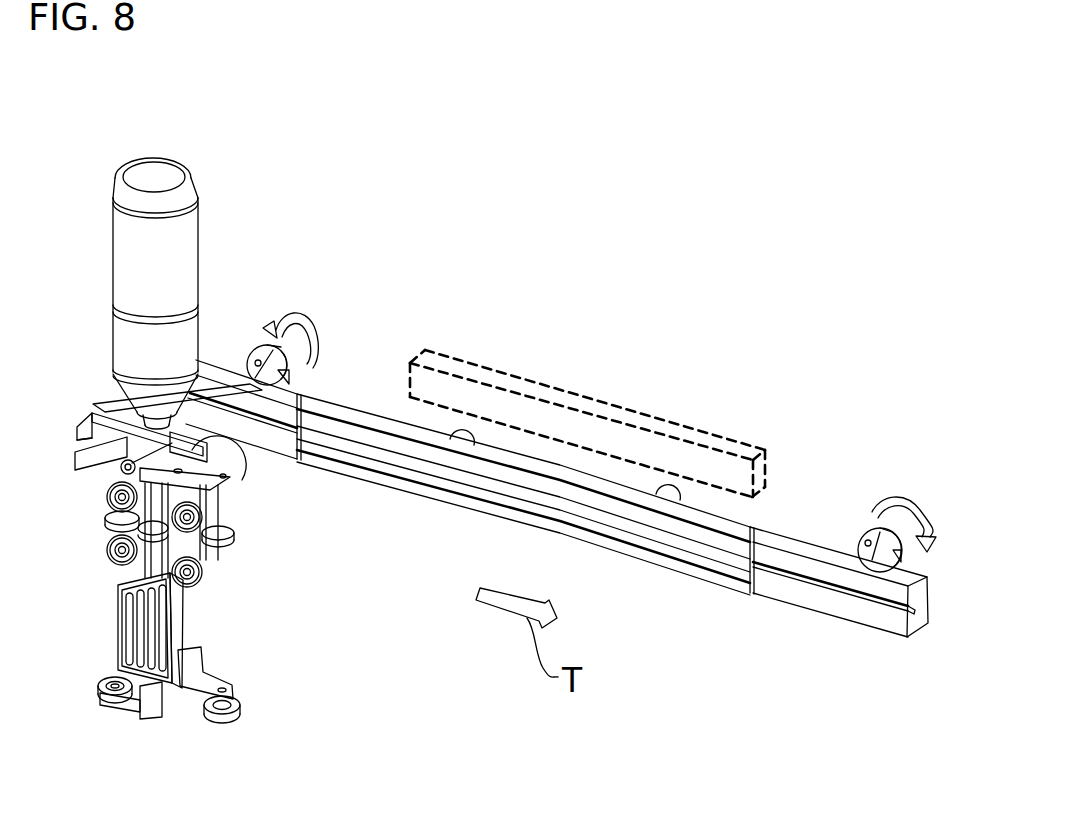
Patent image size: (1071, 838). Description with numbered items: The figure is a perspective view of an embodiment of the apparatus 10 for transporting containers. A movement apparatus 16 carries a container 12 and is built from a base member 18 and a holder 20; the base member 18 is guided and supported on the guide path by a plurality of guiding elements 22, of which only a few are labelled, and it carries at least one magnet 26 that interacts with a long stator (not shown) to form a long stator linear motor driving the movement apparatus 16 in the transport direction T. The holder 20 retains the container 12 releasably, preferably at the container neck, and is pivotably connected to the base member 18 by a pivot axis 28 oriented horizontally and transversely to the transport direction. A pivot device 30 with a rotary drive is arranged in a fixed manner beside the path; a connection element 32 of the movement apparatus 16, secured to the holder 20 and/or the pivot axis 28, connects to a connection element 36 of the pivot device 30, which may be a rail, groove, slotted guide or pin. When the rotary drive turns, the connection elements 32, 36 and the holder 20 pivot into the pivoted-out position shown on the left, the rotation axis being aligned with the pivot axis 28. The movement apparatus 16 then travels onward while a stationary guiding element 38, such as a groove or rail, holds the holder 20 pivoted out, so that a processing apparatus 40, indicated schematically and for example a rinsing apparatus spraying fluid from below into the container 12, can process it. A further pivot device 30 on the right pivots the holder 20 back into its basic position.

The apparatus 10 is at (471, 67).
The container 12 is at (198, 228).
The movement apparatus 16 is at (280, 706).
The base member 18 is at (178, 620).
The holder 20 is at (207, 440).
The guiding elements 22 is at (118, 707).
The magnet 26 is at (125, 633).
The pivot axis 28 is at (122, 467).
The pivot device 30 is at (279, 349).
The connection element 32 is at (205, 414).
The connection element 36 is at (292, 400).
The stationary guiding element 38 is at (428, 483).
The processing apparatus 40 is at (628, 413).